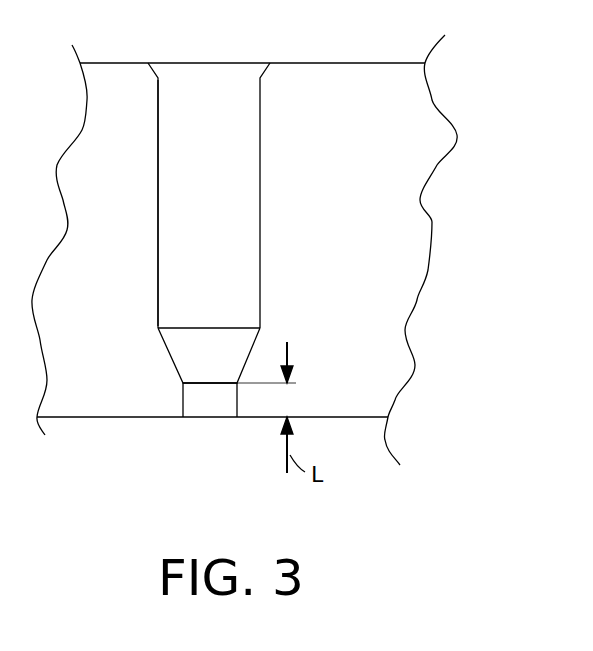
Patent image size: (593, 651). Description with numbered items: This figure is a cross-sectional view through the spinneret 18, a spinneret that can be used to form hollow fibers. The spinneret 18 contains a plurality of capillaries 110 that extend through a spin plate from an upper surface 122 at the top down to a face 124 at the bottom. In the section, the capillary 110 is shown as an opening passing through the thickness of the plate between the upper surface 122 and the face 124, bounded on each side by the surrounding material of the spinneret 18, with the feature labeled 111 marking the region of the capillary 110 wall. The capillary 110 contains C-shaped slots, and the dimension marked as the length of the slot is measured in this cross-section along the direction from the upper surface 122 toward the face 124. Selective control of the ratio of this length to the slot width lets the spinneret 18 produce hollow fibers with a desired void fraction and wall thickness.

The spinneret 18 is at (432, 220).
The capillary 110 is at (233, 135).
The channel wall 111 is at (157, 222).
The upper surface 122 is at (330, 63).
The face 124 is at (130, 417).